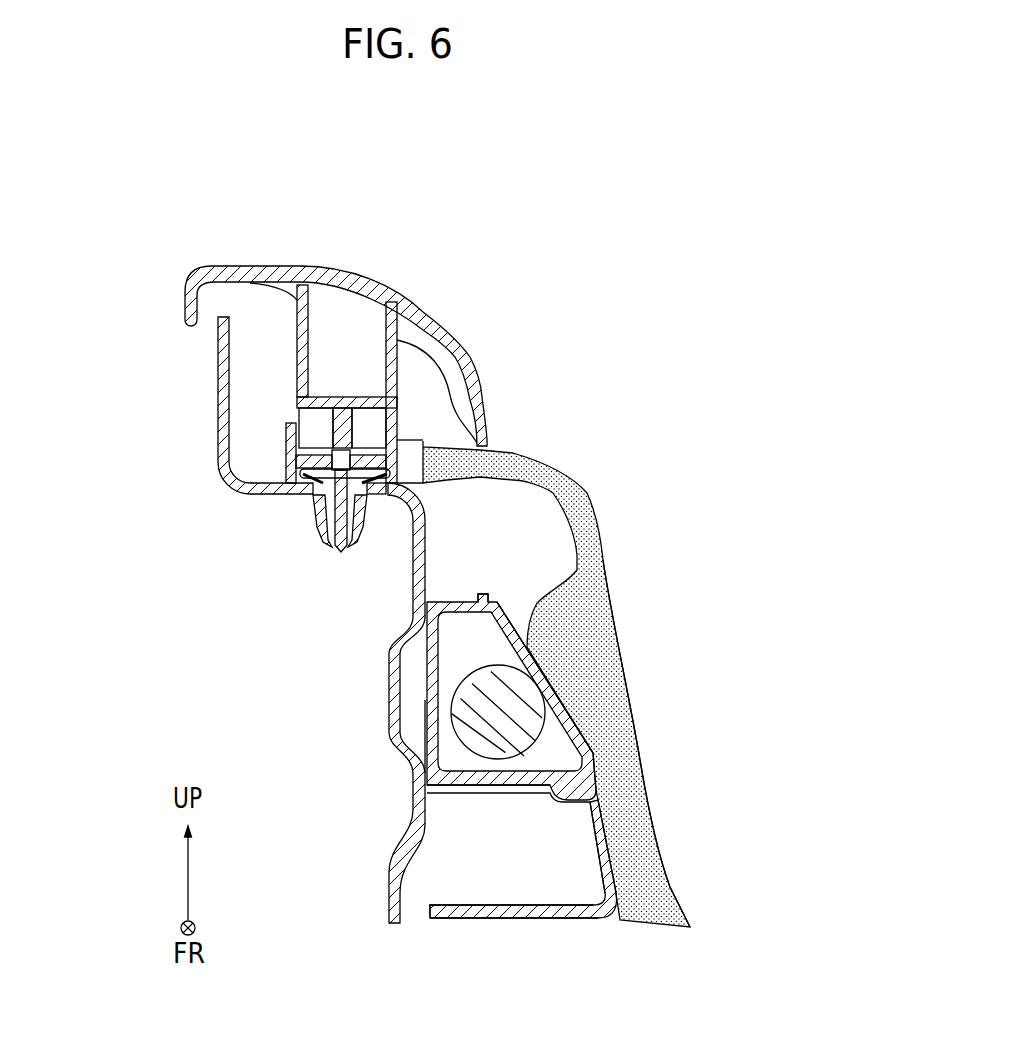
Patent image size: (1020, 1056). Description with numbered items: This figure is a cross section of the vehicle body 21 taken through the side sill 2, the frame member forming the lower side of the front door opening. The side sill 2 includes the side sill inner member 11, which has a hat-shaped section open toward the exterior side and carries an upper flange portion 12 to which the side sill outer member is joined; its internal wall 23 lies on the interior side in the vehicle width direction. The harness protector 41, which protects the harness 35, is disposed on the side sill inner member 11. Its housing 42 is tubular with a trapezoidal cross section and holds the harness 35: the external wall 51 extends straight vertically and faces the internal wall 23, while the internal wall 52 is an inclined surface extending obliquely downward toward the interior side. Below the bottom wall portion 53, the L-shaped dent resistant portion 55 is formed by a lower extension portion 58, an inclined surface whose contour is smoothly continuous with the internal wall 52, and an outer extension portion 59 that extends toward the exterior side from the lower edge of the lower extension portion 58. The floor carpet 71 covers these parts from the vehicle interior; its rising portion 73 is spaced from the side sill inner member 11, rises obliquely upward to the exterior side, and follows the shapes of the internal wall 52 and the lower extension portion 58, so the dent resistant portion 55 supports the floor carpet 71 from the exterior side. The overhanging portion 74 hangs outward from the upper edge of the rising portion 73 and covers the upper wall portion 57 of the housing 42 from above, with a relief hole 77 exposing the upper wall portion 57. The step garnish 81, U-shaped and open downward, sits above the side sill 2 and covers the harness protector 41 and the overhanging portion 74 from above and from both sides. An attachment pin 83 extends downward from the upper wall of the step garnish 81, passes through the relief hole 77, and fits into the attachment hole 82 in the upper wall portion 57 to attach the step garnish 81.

The side sill 2 is at (241, 405).
The side sill inner member 11 is at (241, 405).
The upper flange portion 12 is at (217, 405).
The vehicle body 21 is at (443, 330).
The internal wall 23 is at (357, 703).
The harness 35 is at (518, 697).
The harness protector 41 is at (525, 747).
The housing 42 is at (422, 730).
The external wall 51 is at (503, 673).
The internal wall 52 is at (530, 663).
The bottom wall portion 53 is at (457, 786).
The dent resistant portion 55 is at (572, 909).
The upper wall portion 57 is at (466, 603).
The lower extension portion 58 is at (608, 860).
The outer extension portion 59 is at (573, 920).
The floor carpet 71 is at (577, 643).
The rising portion 73 is at (638, 747).
The overhanging portion 74 is at (505, 452).
The relief hole 77 is at (423, 458).
The step garnish 81 is at (326, 330).
The attachment hole 82 is at (337, 543).
The attachment pin 83 is at (293, 346).